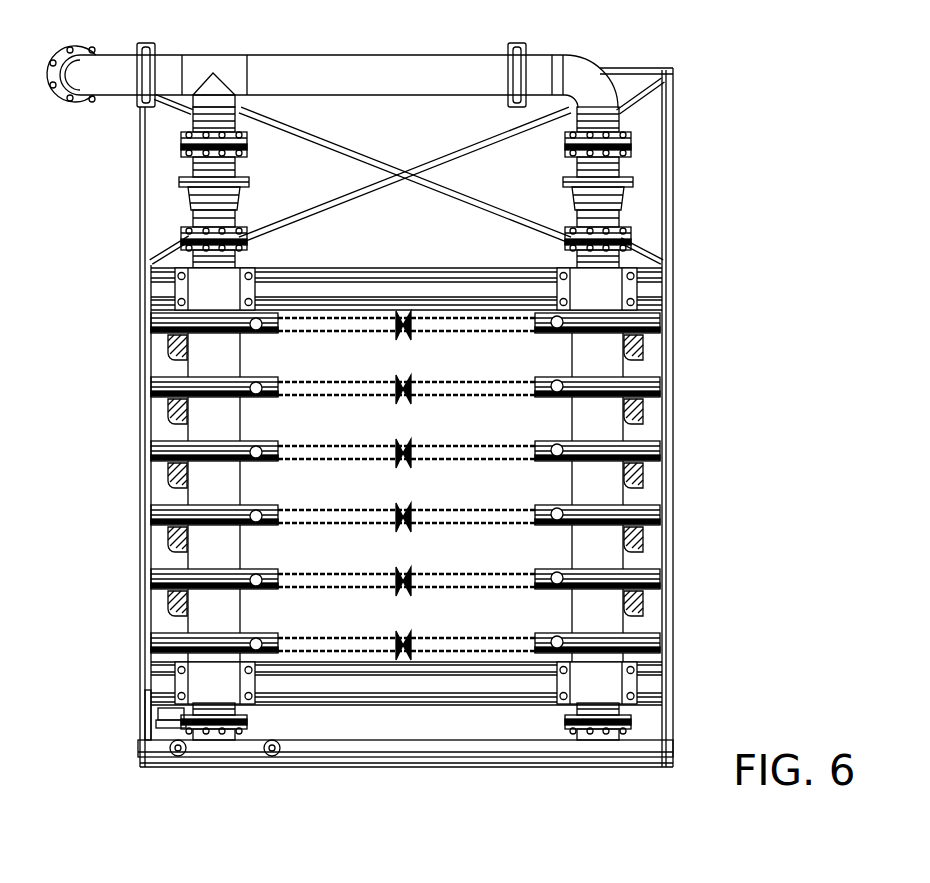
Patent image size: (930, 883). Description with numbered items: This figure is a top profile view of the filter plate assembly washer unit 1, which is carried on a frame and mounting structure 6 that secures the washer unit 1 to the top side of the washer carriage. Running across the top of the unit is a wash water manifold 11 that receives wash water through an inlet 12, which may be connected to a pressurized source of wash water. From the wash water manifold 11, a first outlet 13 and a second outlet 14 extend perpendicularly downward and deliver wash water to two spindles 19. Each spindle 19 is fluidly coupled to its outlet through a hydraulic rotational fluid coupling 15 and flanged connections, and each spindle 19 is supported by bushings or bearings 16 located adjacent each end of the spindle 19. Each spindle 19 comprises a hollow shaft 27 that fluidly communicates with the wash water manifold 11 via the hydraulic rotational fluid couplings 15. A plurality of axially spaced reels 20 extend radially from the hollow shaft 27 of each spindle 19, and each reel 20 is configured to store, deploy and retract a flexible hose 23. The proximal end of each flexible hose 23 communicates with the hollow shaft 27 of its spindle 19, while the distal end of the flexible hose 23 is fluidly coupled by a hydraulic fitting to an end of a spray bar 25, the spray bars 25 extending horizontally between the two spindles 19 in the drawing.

The filter plate assembly washer unit 1 is at (758, 316).
The frame and mounting structure 6 is at (674, 188).
The wash water manifold 11 is at (413, 84).
The inlet 12 is at (72, 96).
The first outlet 13 is at (221, 96).
The second outlet 14 is at (600, 110).
The hydraulic rotational fluid coupling 15 is at (213, 196).
The bushings or bearings 16 is at (205, 292).
The spindle 19 is at (606, 427).
The reel 20 is at (163, 574).
The flexible hose 23 is at (163, 647).
The spray bar 25 is at (370, 324).
The hollow shaft 27 is at (208, 484).